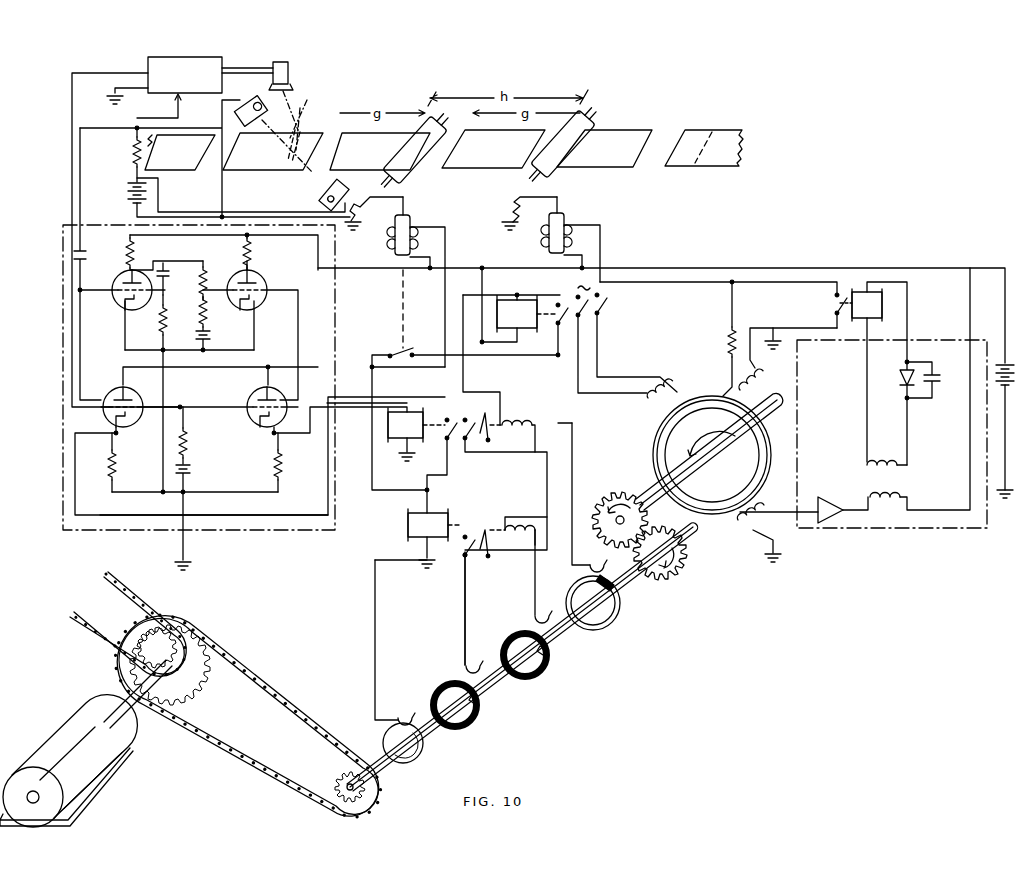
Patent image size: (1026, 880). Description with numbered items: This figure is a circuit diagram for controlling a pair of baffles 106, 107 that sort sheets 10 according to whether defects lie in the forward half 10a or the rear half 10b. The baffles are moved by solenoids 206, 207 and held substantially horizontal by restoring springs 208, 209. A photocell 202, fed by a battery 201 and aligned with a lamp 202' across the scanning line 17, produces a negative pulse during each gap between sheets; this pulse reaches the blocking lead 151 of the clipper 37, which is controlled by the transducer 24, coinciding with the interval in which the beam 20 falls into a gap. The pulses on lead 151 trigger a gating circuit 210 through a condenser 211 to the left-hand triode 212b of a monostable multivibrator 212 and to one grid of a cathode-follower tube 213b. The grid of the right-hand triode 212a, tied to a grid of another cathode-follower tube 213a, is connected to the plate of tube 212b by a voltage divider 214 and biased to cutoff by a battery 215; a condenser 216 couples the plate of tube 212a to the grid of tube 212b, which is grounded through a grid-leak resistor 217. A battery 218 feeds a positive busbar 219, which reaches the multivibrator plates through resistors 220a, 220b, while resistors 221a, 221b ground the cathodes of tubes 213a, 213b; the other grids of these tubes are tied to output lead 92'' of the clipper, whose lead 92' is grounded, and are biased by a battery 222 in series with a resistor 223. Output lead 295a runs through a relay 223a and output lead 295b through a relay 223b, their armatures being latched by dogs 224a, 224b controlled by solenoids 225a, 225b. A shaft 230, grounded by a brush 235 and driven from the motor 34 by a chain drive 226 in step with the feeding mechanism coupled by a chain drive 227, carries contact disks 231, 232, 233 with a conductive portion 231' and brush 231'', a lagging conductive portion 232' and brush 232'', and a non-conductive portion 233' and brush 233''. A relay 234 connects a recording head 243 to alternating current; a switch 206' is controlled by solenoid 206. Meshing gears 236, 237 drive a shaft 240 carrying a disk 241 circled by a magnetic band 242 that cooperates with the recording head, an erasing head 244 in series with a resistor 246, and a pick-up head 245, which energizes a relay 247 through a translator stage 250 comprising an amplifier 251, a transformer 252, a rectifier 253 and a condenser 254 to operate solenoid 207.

The clipper 37 is at (222, 60).
The transducer 24 is at (289, 62).
The beam 20 is at (311, 98).
The output lead 92' is at (120, 88).
The output lead 92'' is at (109, 240).
The blocking lead 151 is at (178, 115).
The photocell 202 is at (273, 125).
The lamp 202' is at (350, 192).
The battery 201 is at (128, 192).
The rear half 10b is at (240, 173).
The forward half 10a is at (277, 167).
The scanning line 17 is at (292, 170).
The baffle 106 is at (440, 117).
The baffle 107 is at (588, 120).
The sheet 10 is at (721, 117).
The restoring spring 208 is at (372, 225).
The solenoid 206 is at (416, 282).
The restoring spring 209 is at (513, 206).
The solenoid 207 is at (566, 220).
The positive busbar 219 is at (690, 268).
The relay 247 is at (862, 279).
The battery 218 is at (1000, 360).
The gating circuit 210 is at (63, 265).
The condenser 211 is at (96, 246).
The resistor 220b is at (138, 246).
The monostable multivibrator 212 is at (203, 240).
The resistor 220a is at (253, 246).
The left-hand triode 212b is at (118, 283).
The right-hand triode 212a is at (262, 284).
The condenser 216 is at (170, 282).
The voltage divider 214 is at (198, 292).
The grid-leak resistor 217 is at (155, 321).
The battery 215 is at (210, 333).
The cathode-follower tube 213b is at (113, 391).
The cathode-follower tube 213a is at (253, 392).
The resistor 223 is at (190, 440).
The battery 222 is at (190, 466).
The resistor 221b is at (116, 459).
The resistor 221a is at (282, 459).
The output lead 295a is at (350, 403).
The output lead 295b is at (283, 536).
The switch 206' is at (460, 410).
The relay 234 is at (515, 285).
The relay 223a is at (410, 405).
The dog 224a is at (475, 448).
The dog 224b is at (484, 522).
The relay 223b is at (408, 518).
The solenoid 225a is at (518, 410).
The solenoid 225b is at (518, 514).
The resistor 246 is at (725, 342).
The recording head 243 is at (676, 376).
The erasing head 244 is at (762, 374).
The magnetic band 242 is at (665, 425).
The disk 241 is at (668, 442).
The shaft 240 is at (675, 475).
The gear 236 is at (612, 500).
The brush 233'' is at (582, 497).
The non-conductive portion 233' is at (522, 657).
The contact disk 233 is at (610, 607).
The gear 237 is at (686, 566).
The pick-up head 245 is at (733, 532).
The amplifier 251 is at (834, 488).
The transformer 252 is at (905, 480).
The rectifier 253 is at (903, 387).
The condenser 254 is at (935, 398).
The translator stage 250 is at (897, 532).
The brush 232'' is at (522, 576).
The conductive portion 232' is at (565, 651).
The contact disk 232 is at (543, 663).
The brush 231'' is at (453, 612).
The conductive peripheral portion 231' is at (500, 697).
The contact disk 231 is at (474, 712).
The brush 235 is at (404, 713).
The shaft 230 is at (412, 760).
The chain drive 227 is at (85, 628).
The chain drive 226 is at (257, 683).
The motor 34 is at (70, 718).